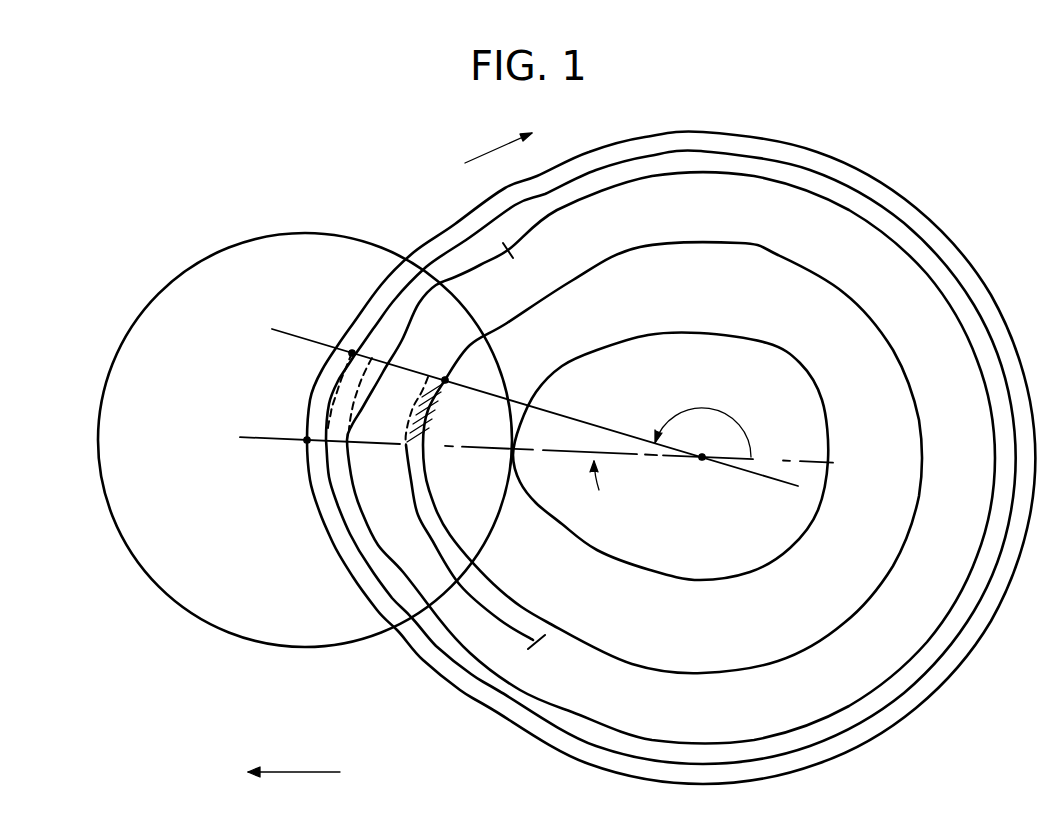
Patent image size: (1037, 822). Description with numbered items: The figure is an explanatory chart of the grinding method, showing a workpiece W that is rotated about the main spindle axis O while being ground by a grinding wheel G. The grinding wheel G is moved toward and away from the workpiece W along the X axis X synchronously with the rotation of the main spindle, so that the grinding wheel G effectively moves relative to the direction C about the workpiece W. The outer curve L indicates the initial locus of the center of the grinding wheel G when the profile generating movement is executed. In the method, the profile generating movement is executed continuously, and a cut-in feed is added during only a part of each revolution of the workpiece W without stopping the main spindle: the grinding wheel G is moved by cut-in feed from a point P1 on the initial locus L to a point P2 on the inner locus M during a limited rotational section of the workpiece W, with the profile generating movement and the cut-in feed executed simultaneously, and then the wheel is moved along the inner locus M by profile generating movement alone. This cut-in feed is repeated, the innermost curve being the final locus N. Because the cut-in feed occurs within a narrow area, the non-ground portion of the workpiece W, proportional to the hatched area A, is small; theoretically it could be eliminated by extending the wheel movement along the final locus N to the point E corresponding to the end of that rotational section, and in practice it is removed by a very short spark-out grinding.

The initial locus L is at (453, 220).
The inner locus M is at (593, 170).
The grinding wheel G is at (298, 234).
The final locus N is at (681, 673).
The workpiece W is at (787, 360).
The area A is at (408, 440).
The point on initial locus P1 is at (306, 440).
The point on inner locus P2 is at (352, 353).
The point E is at (445, 380).
The main spindle axis O is at (695, 473).
The direction of relative movement of grinding wheel C is at (498, 140).
The X axis X is at (294, 756).